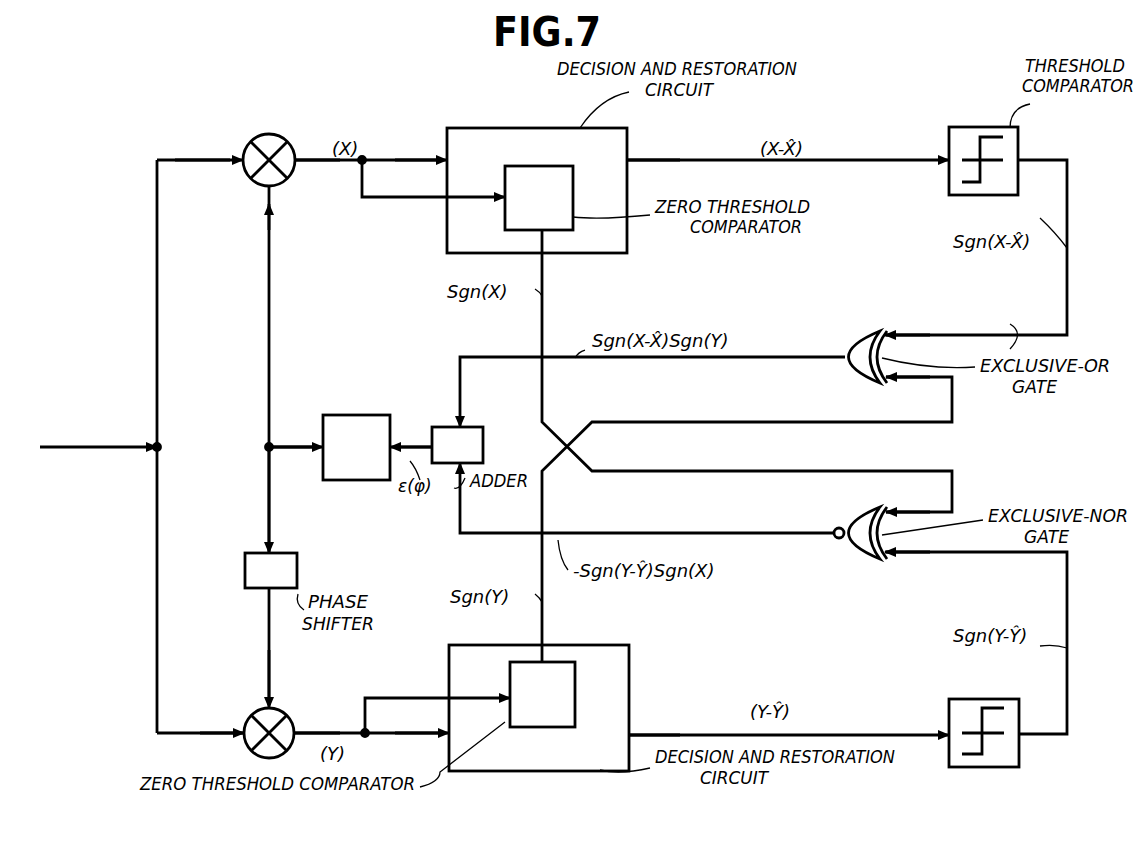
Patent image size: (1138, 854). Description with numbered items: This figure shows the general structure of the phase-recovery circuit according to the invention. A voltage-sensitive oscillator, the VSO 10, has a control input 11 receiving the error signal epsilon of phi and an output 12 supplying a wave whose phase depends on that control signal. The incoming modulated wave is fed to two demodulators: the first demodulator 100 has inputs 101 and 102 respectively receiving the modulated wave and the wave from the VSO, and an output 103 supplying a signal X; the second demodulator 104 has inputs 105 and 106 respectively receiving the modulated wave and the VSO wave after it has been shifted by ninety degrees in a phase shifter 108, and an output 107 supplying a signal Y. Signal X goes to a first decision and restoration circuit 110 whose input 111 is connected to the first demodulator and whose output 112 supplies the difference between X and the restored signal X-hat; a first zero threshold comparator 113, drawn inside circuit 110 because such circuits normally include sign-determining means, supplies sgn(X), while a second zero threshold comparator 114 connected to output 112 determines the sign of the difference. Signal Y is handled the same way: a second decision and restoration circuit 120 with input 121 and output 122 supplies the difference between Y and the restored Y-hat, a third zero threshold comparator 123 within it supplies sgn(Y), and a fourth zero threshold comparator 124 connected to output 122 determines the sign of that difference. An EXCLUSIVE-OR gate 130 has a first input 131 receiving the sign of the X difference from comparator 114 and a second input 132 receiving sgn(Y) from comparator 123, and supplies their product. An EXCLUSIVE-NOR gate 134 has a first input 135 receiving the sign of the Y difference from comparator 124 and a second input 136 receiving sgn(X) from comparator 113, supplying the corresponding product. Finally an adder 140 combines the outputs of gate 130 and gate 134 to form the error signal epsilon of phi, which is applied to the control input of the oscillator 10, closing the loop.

The first demodulator 100 is at (266, 141).
The first input of first demodulator 101 is at (240, 156).
The second input of first demodulator 102 is at (274, 187).
The output of first demodulator 103 is at (297, 155).
The second demodulator 104 is at (254, 745).
The first input of second demodulator 105 is at (244, 729).
The second input of second demodulator 106 is at (276, 707).
The output of second demodulator 107 is at (300, 728).
The phase shifter 108 is at (271, 570).
The first decision and restoration circuit 110 is at (529, 131).
The input of first decision and restoration circuit 111 is at (442, 157).
The output of first decision and restoration circuit 112 is at (633, 158).
The first zero threshold comparator 113 is at (539, 198).
The second zero threshold comparator 114 is at (975, 130).
The second decision and restoration circuit 120 is at (604, 646).
The input of second decision and restoration circuit 121 is at (440, 740).
The output of second decision and restoration circuit 122 is at (633, 733).
The third zero threshold comparator 123 is at (542, 694).
The fourth zero threshold comparator 124 is at (982, 693).
The first EXCLUSIVE-OR gate 130 is at (856, 336).
The first input of EXCLUSIVE-OR gate 131 is at (888, 333).
The second input of EXCLUSIVE-OR gate 132 is at (886, 380).
The second EXCLUSIVE-NOR gate 134 is at (853, 553).
The first input of EXCLUSIVE-NOR gate 135 is at (888, 555).
The second input of EXCLUSIVE-NOR gate 136 is at (888, 511).
The adder 140 is at (457, 445).
The VSO 10 is at (356, 447).
The control input 11 is at (393, 438).
The output of VSO 12 is at (322, 444).